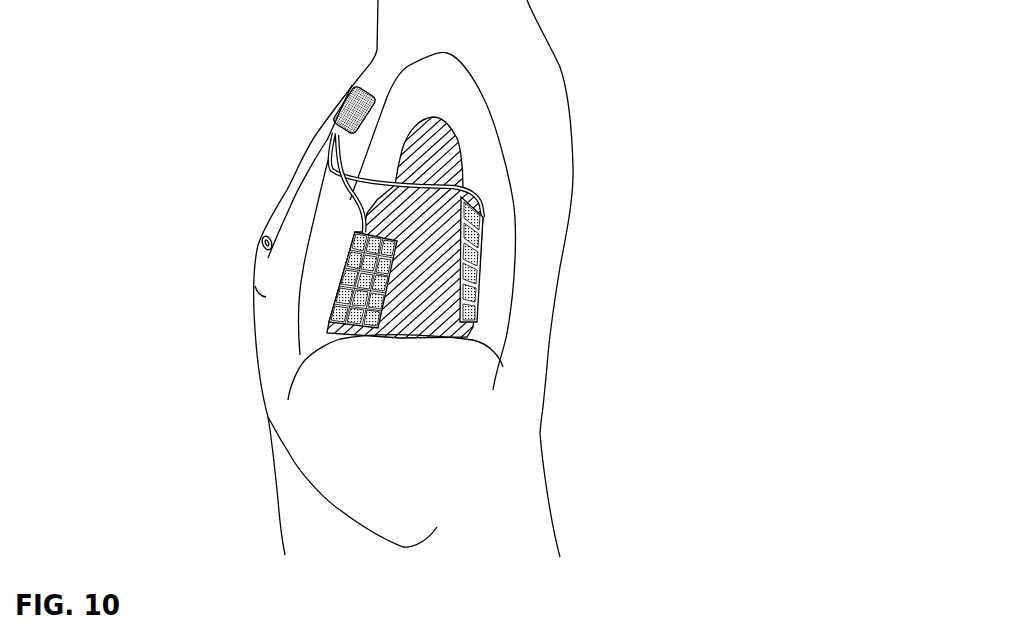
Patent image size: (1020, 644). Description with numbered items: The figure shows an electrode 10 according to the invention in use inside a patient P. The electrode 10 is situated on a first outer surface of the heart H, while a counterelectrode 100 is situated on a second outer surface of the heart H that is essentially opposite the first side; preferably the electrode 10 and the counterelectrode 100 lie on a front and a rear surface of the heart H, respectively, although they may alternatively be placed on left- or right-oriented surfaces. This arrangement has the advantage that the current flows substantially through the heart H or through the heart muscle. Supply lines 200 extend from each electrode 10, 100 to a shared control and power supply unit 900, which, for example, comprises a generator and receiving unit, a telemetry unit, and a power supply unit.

The patient P is at (540, 62).
The heart H is at (453, 143).
The shared control and power supply unit 900 is at (350, 107).
The supply lines 200 is at (333, 166).
The counterelectrode 100 is at (335, 303).
The electrode 10 is at (480, 267).